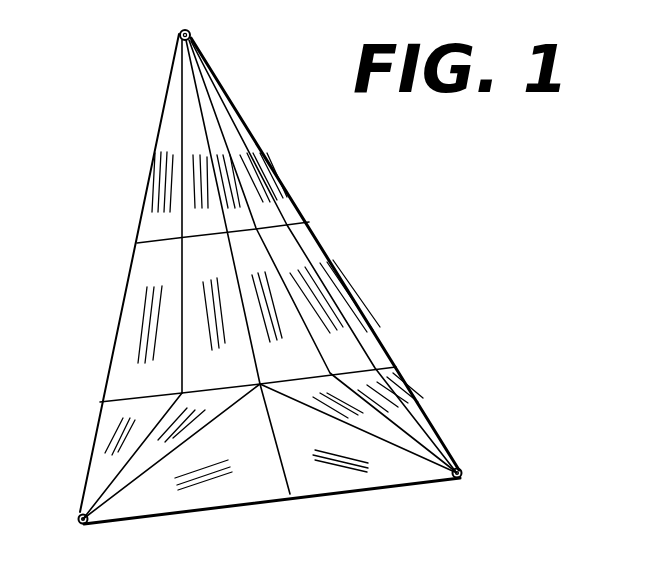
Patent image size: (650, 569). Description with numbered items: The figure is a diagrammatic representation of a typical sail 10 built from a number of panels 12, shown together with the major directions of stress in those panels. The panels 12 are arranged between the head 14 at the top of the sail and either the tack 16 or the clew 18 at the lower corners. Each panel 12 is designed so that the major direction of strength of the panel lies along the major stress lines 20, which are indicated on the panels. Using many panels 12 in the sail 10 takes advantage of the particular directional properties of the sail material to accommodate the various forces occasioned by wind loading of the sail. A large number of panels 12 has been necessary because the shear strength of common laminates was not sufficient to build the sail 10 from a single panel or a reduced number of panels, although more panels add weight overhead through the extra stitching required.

The sail 10 is at (413, 221).
The panels 12 is at (290, 211).
The head 14 is at (191, 32).
The tack 16 is at (77, 516).
The clew 18 is at (466, 470).
The major stress lines 20 is at (178, 166).